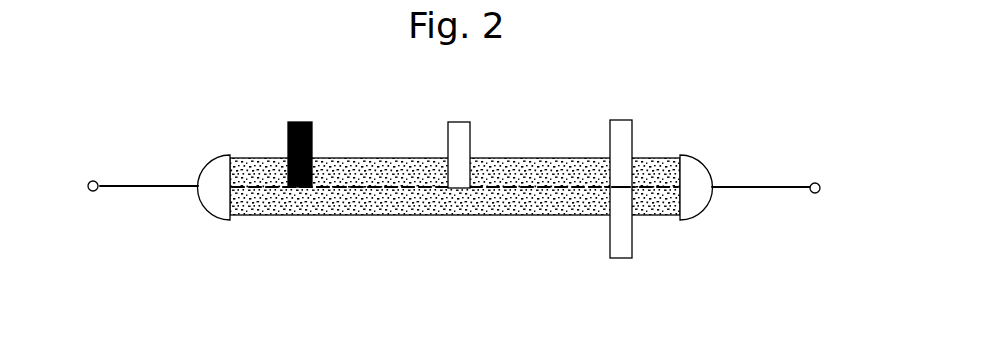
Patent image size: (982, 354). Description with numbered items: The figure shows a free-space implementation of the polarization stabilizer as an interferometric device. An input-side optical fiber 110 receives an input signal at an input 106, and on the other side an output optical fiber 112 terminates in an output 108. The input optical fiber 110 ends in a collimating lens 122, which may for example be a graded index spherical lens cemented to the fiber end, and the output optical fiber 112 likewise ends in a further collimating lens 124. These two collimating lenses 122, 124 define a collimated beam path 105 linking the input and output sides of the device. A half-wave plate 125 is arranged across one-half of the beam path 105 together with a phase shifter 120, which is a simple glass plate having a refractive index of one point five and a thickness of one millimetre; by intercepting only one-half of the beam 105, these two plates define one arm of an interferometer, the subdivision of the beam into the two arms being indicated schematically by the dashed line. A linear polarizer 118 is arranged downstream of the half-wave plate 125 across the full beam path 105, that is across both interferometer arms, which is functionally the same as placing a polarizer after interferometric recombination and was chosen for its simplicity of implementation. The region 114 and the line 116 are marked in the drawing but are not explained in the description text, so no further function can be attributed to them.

The collimated beam path 105 is at (367, 217).
The input 106 is at (93, 205).
The output 108 is at (823, 193).
The input-side optical fiber 110 is at (133, 190).
The output optical fiber 112 is at (752, 197).
The cladding / fiber body 114 is at (257, 163).
The optical axis / beam path 116 is at (283, 208).
The linear polarizer 118 is at (617, 260).
The phase shifter 120 is at (470, 140).
The collimating lens 122 is at (200, 207).
The further collimating lens 124 is at (688, 223).
The half-wave plate 125 is at (312, 140).